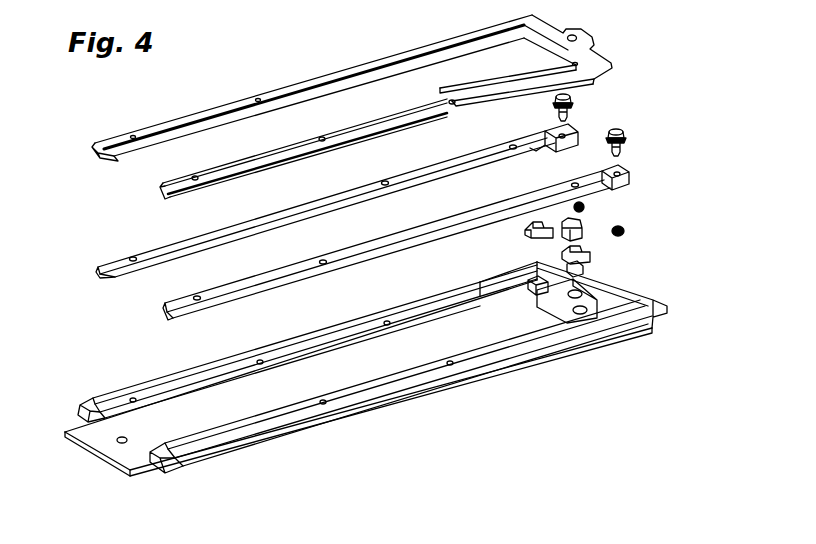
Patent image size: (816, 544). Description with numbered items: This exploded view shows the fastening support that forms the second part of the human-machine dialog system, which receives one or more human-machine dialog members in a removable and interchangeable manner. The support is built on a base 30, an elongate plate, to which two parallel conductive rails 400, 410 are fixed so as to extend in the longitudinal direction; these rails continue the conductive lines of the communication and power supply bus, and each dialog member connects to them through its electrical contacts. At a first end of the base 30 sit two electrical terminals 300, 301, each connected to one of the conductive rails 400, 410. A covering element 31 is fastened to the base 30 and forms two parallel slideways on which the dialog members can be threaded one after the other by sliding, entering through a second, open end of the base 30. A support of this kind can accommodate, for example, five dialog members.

The base 30 is at (222, 456).
The covering element 31 is at (112, 145).
The electrical terminal 300 is at (574, 110).
The electrical terminal 301 is at (627, 146).
The conductive rail 400 is at (137, 252).
The conductive rail 410 is at (162, 312).